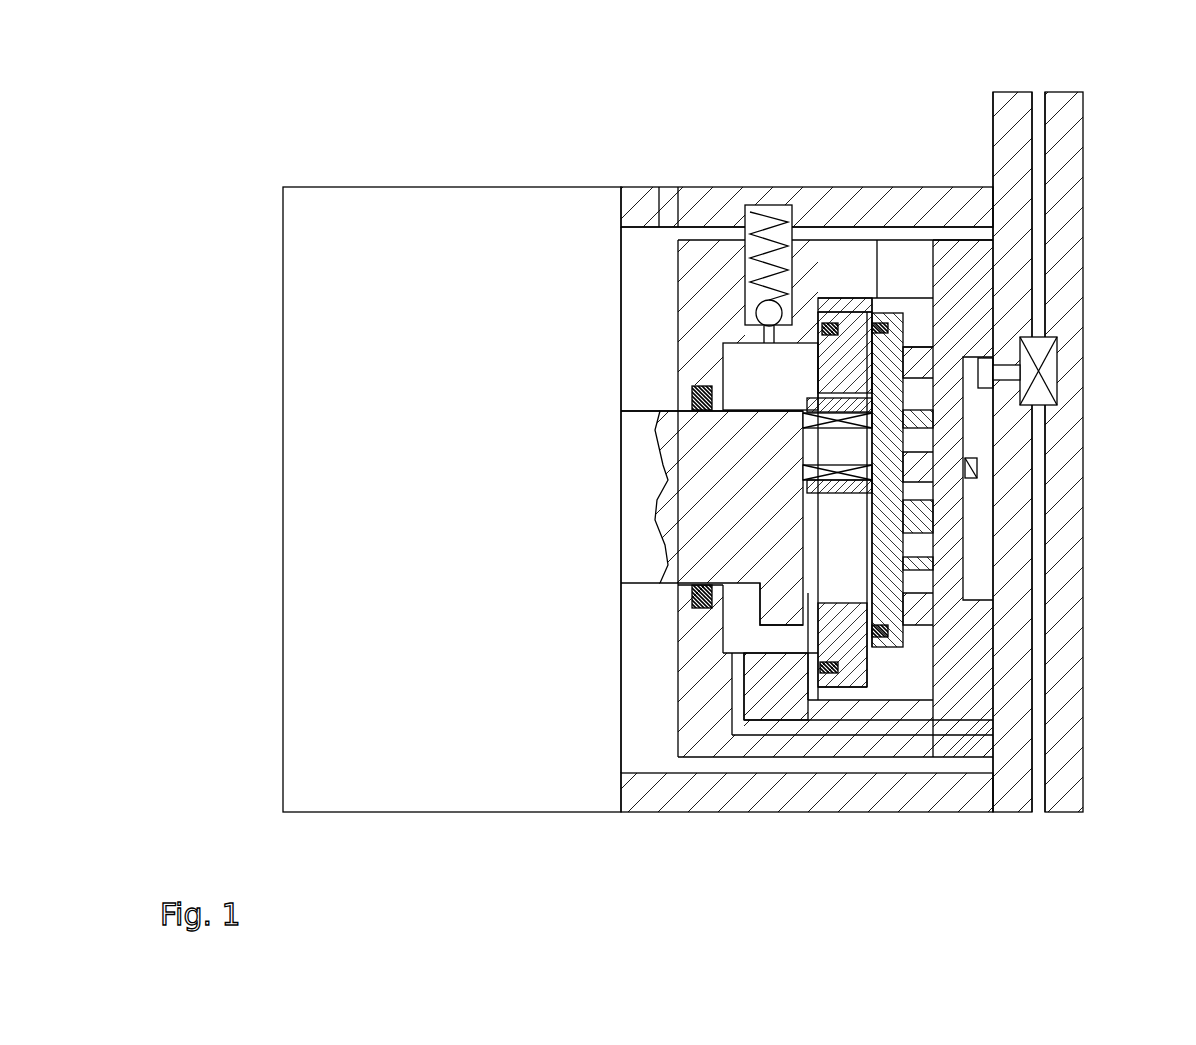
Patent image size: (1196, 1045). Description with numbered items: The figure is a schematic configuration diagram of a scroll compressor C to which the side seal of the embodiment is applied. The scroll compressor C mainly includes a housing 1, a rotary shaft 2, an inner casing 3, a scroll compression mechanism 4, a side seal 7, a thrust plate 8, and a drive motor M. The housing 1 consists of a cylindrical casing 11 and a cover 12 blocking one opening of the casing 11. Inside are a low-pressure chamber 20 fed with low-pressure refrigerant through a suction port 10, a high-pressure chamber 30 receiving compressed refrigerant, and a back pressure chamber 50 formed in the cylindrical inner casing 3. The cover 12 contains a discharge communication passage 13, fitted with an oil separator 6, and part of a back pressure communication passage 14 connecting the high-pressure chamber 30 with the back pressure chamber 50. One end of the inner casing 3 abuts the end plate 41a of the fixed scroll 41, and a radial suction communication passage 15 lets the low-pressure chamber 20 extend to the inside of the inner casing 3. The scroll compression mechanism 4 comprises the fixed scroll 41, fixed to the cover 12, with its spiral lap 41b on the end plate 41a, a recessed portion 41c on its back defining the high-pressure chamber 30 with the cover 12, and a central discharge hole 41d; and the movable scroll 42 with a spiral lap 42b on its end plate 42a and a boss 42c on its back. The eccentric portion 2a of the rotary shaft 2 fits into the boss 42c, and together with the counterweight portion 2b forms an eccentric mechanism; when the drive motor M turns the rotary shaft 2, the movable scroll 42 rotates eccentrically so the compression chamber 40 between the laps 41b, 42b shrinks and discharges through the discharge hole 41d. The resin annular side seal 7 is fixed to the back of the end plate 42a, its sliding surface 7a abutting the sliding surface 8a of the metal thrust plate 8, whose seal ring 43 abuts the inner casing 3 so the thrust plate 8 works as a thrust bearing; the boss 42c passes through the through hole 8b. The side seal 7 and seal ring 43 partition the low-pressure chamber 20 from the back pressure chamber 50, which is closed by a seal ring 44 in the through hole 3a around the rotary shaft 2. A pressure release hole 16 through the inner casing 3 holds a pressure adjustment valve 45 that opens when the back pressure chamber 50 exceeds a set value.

The scroll compressor C is at (425, 175).
The drive motor M is at (448, 785).
The housing 1 is at (1060, 890).
The rotary shaft 2 is at (640, 592).
The eccentric portion 2a is at (847, 450).
The counterweight portion 2b is at (760, 627).
The inner casing 3 is at (723, 232).
The through hole 3a is at (683, 414).
The scroll compression mechanism 4 is at (977, 80).
The oil separator 6 is at (1048, 367).
The side seal 7 is at (860, 310).
The sliding surface 7a is at (868, 663).
The thrust plate 8 is at (832, 320).
The sliding surface 8a is at (880, 632).
The through hole 8b is at (826, 678).
The suction port 10 is at (675, 207).
The casing 11 is at (978, 815).
The cover 12 is at (1042, 815).
The discharge communication passage 13 is at (1030, 110).
The back pressure communication passage 14 is at (955, 727).
The suction communication passage 15 is at (878, 268).
The pressure release hole 16 is at (768, 350).
The low-pressure chamber 20 is at (650, 240).
The high-pressure chamber 30 is at (983, 583).
The compression chamber 40 is at (970, 465).
The fixed scroll 41 is at (968, 232).
The end plate 41a is at (975, 247).
The spiral lap 41b is at (938, 452).
The recessed portion 41c is at (1005, 378).
The discharge hole 41d is at (940, 480).
The movable scroll 42 is at (900, 303).
The end plate 42a is at (933, 347).
The spiral lap 42b is at (915, 512).
The boss 42c is at (848, 493).
The seal ring 43 is at (833, 657).
The seal ring 44 is at (695, 397).
The pressure adjustment valve 45 is at (763, 207).
The back pressure chamber 50 is at (743, 375).